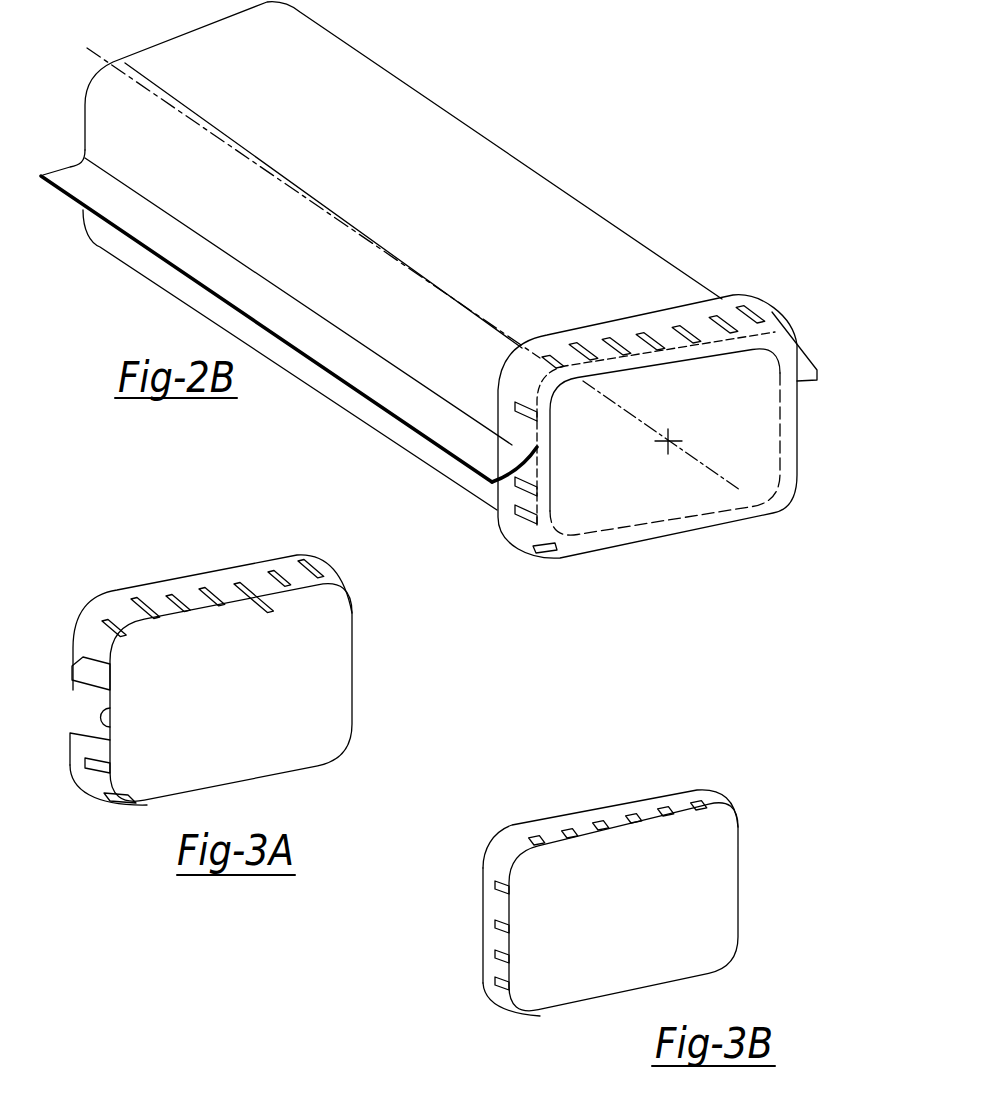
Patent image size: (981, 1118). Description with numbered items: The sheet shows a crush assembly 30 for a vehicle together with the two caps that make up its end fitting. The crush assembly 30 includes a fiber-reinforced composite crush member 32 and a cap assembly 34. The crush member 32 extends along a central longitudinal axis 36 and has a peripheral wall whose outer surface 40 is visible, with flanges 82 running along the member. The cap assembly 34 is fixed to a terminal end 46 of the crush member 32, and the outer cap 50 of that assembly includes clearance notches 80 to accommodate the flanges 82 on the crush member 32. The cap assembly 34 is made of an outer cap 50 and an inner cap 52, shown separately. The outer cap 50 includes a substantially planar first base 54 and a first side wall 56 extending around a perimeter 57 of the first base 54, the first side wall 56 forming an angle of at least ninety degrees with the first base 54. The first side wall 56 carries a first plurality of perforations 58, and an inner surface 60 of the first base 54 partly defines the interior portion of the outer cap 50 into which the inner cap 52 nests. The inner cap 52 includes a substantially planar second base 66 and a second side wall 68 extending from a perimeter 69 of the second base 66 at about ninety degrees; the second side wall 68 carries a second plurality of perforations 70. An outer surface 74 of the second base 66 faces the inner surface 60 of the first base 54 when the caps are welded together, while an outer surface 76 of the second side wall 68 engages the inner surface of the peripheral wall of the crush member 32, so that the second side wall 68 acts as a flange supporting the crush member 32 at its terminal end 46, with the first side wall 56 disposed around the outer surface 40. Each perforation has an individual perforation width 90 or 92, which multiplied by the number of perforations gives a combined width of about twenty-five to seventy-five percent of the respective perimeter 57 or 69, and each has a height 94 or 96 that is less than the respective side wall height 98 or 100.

In FIG. 2B, the crush assembly 30 is at (432, 280).
In FIG. 2B, the crush member 32 is at (403, 180).
In FIG. 2B, the cap assembly 34 is at (641, 390).
In FIG. 2B, the central longitudinal axis 36 is at (697, 458).
In FIG. 2B, the outer surface 40 is at (528, 193).
In FIG. 2B, the terminal end 46 is at (478, 512).
In FIG. 3A, the outer cap 50 is at (240, 676).
In FIG. 3B, the inner cap 52 is at (624, 893).
In FIG. 3A, the first base 54 is at (323, 675).
In FIG. 2B, the first side wall 56 is at (718, 312).
In FIG. 3A, the first side wall 56 is at (270, 567).
In FIG. 3A, the perimeter 57 is at (358, 625).
In FIG. 3A, the first plurality of perforations 58 is at (234, 584).
In FIG. 3A, the inner surface 60 is at (112, 727).
In FIG. 3B, the second base 66 is at (717, 855).
In FIG. 3B, the second side wall 68 is at (673, 802).
In FIG. 3B, the perimeter 69 is at (808, 893).
In FIG. 3B, the second plurality of perforations 70 is at (593, 818).
In FIG. 3B, the outer surface 74 is at (563, 988).
In FIG. 3B, the outer surface 76 is at (490, 880).
In FIG. 2B, the clearance notches 80 is at (512, 443).
In FIG. 3A, the clearance notches 80 is at (88, 693).
In FIG. 2B, the flanges 82 is at (222, 267).
In FIG. 3A, the perforation width 90 is at (317, 600).
In FIG. 3B, the perforation width 92 is at (429, 794).
In FIG. 3A, the height 94 is at (52, 645).
In FIG. 3B, the height 96 is at (510, 890).
In FIG. 3A, the side wall height 98 is at (38, 656).
In FIG. 3B, the side wall height 100 is at (510, 910).